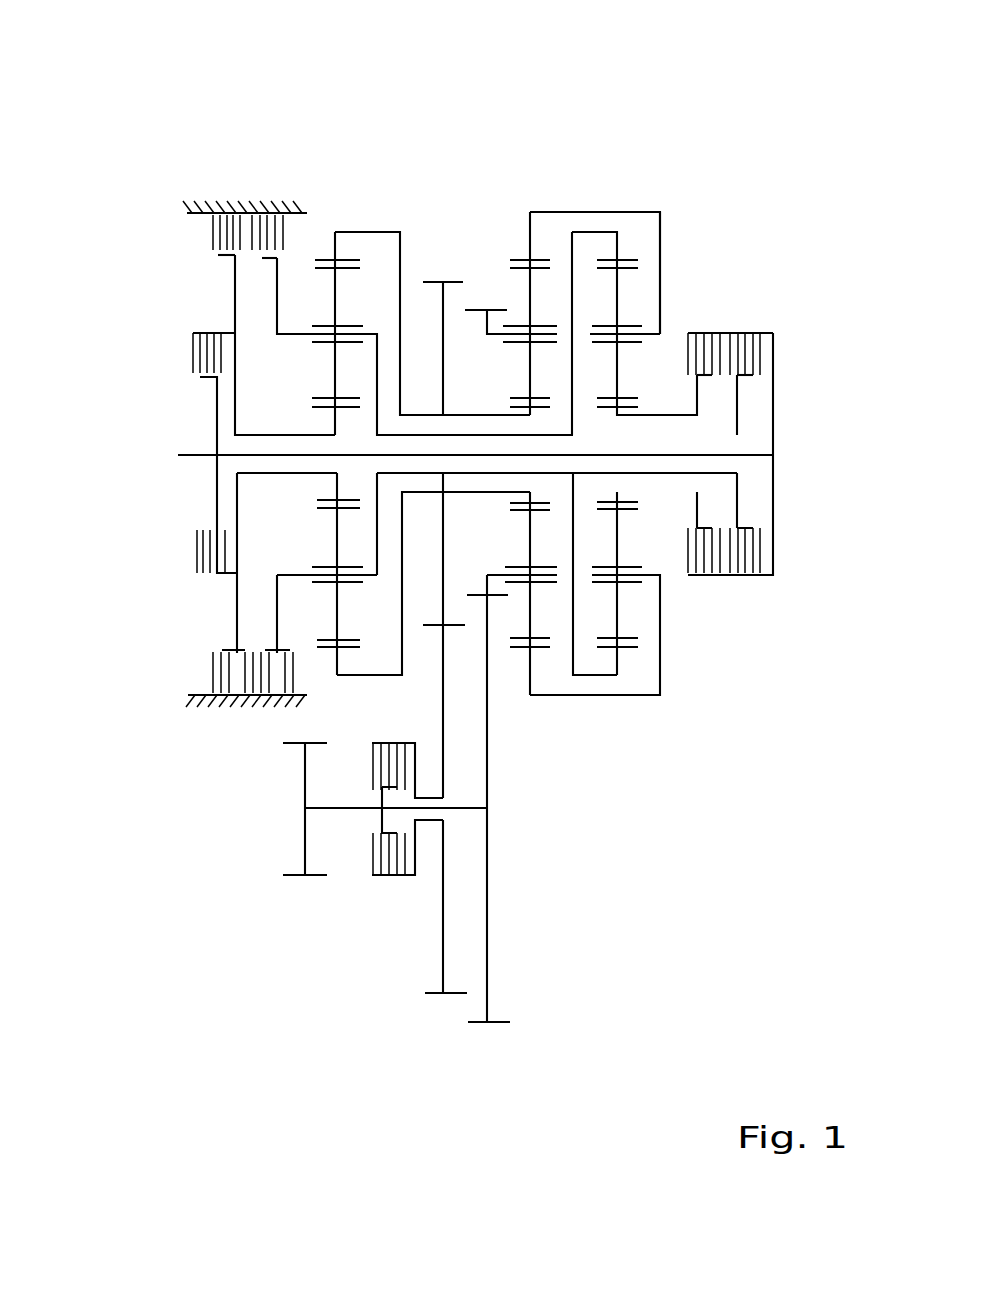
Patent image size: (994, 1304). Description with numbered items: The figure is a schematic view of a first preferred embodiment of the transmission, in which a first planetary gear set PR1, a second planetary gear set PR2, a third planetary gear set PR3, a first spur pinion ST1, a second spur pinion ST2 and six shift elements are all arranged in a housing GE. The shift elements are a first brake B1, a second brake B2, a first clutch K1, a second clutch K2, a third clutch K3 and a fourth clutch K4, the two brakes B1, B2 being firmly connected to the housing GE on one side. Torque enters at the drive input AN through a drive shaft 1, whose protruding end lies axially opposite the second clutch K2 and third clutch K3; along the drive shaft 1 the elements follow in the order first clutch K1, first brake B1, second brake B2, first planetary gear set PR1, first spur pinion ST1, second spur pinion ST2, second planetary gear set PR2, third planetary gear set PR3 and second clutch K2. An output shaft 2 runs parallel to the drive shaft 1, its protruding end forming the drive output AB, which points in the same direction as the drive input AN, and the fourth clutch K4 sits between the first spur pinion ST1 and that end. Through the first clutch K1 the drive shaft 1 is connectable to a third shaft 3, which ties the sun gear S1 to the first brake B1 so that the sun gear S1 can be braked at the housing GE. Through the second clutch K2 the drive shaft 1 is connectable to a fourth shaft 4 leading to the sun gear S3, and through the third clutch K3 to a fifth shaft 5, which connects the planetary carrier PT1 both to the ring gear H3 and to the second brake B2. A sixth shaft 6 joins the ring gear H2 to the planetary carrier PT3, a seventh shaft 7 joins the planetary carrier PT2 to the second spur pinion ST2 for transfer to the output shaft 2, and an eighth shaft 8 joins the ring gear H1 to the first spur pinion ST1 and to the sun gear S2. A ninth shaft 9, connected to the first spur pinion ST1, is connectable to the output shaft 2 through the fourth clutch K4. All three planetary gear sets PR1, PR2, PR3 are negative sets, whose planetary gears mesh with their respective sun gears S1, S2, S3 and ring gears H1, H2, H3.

The drive shaft 1 is at (197, 458).
The output shaft 2 is at (337, 817).
The third shaft 3 is at (230, 308).
The fourth shaft 4 is at (698, 388).
The fifth shaft 5 is at (270, 290).
The sixth shaft 6 is at (662, 282).
The seventh shaft 7 is at (493, 333).
The eighth shaft 8 is at (370, 218).
The ninth shaft 9 is at (433, 823).
The drive input AN is at (475, 437).
The drive output AB is at (305, 792).
The housing GE is at (187, 205).
The first brake B1 is at (209, 235).
The second brake B2 is at (284, 236).
The first clutch K1 is at (200, 453).
The second clutch K2 is at (730, 432).
The third clutch K3 is at (730, 433).
The fourth clutch K4 is at (407, 792).
The first planetary gear set PR1 is at (336, 160).
The second planetary gear set PR2 is at (529, 160).
The third planetary gear set PR3 is at (615, 160).
The sun gear of the first planetary gear set S1 is at (310, 400).
The sun gear of the second planetary gear set S2 is at (548, 503).
The sun gear of the third planetary gear set S3 is at (633, 502).
The ring gear of the first planetary gear set H1 is at (313, 645).
The ring gear of the second planetary gear set H2 is at (547, 262).
The ring gear of the third planetary gear set H3 is at (640, 645).
The planetary carrier of the first planetary gear set PT1 is at (313, 582).
The planetary carrier of the second planetary gear set PT2 is at (543, 583).
The planetary carrier of the third planetary gear set PT3 is at (622, 578).
The first spur pinion ST1 is at (443, 200).
The second spur pinion ST2 is at (487, 200).